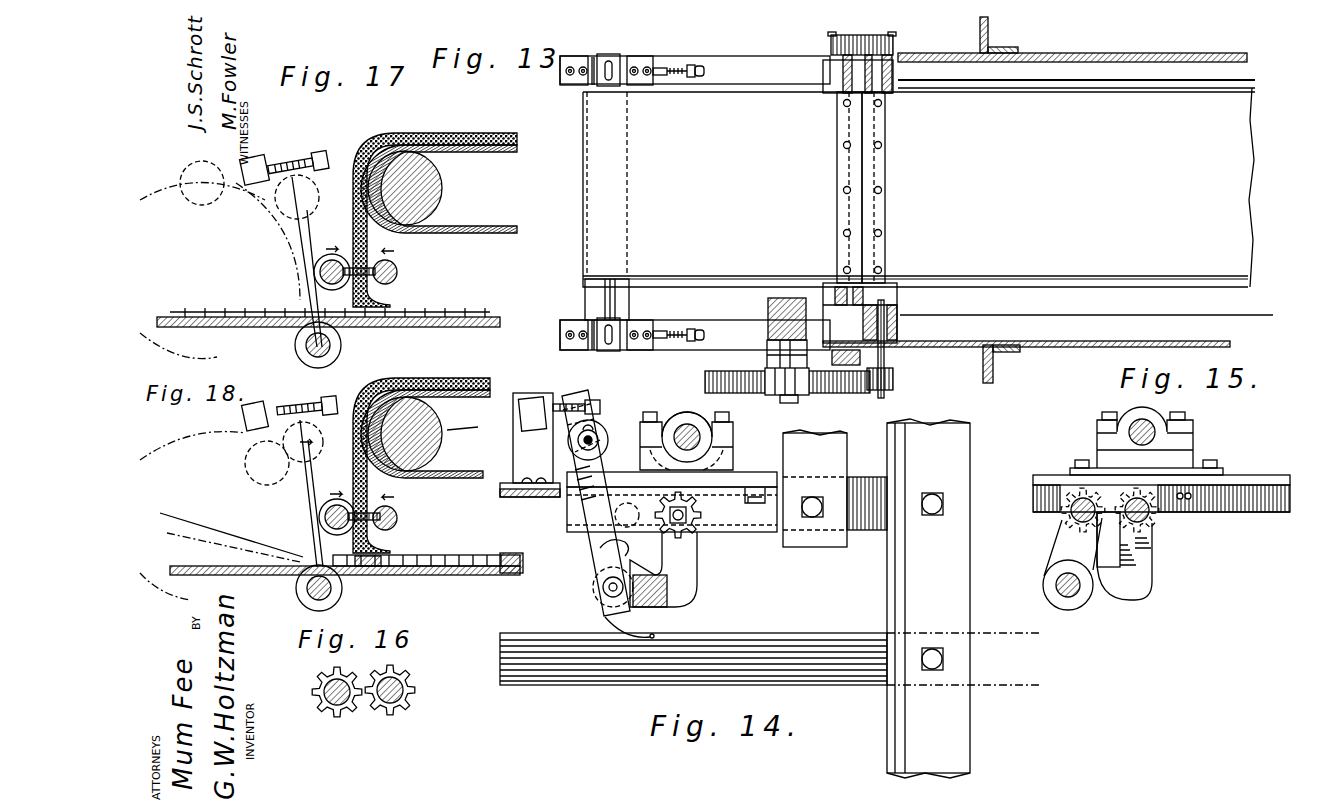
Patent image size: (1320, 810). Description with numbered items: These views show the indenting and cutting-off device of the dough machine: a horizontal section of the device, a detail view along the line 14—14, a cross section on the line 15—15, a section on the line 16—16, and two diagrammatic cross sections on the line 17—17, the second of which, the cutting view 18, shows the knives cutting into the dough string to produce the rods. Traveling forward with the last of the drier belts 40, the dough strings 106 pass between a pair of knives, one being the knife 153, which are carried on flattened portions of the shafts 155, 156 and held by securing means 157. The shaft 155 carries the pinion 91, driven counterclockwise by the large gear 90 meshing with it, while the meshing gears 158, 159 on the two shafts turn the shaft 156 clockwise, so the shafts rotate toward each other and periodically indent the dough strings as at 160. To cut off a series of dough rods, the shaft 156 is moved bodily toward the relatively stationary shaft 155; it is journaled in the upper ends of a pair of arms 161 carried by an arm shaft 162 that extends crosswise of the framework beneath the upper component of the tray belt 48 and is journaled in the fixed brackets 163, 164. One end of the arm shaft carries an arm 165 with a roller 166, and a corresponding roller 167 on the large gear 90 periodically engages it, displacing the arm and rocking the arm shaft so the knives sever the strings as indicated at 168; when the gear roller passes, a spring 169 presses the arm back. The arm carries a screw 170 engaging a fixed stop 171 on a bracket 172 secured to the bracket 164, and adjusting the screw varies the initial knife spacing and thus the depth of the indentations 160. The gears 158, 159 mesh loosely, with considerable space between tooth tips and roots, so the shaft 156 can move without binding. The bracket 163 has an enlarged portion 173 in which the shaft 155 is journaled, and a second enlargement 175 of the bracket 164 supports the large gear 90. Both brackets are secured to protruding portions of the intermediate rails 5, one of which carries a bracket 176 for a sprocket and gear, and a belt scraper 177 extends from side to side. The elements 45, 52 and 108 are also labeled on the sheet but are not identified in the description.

In FIG. 14, the intermediate rails 5 is at (758, 507).
In FIG. 15, the intermediate rails 5 is at (1258, 484).
In FIG. 13, the bracket piece 14 is at (833, 358).
In FIG. 13, the section line 15 is at (789, 108).
In FIG. 13, the section line / post 16 is at (822, 37).
In FIG. 13, the section line / base bar 17 is at (902, 164).
In FIG. 14, the section line / base bar 17 is at (930, 395).
In FIG. 18, the inclined guide 18 is at (190, 522).
In FIG. 17, the drier belts 40 is at (492, 144).
In FIG. 18, the drier belts 40 is at (452, 392).
In FIG. 13, the drier belts 40 is at (688, 405).
In FIG. 14, the drier belts 40 is at (688, 410).
In FIG. 17, the roller / bearing 45 is at (443, 190).
In FIG. 18, the roller / bearing 45 is at (440, 452).
In FIG. 14, the roller / bearing 45 is at (712, 425).
In FIG. 18, the tray belt 48 is at (237, 576).
In FIG. 13, the tray belt 48 is at (678, 266).
In FIG. 13, the lower rail 52 is at (595, 299).
In FIG. 13, the large gear 90 is at (787, 391).
In FIG. 13, the pinion 91 is at (885, 380).
In FIG. 14, the pinion 91 is at (695, 537).
In FIG. 18, the dough strings 106 is at (374, 395).
In FIG. 17, the curved guide 108 is at (375, 120).
In FIG. 17, the knife 153 is at (395, 266).
In FIG. 18, the knife 153 is at (398, 513).
In FIG. 17, the shaft 155 is at (398, 275).
In FIG. 18, the shaft 155 is at (398, 522).
In FIG. 16, the shaft 155 is at (414, 700).
In FIG. 13, the shaft 155 is at (897, 312).
In FIG. 15, the shaft 155 is at (1152, 525).
In FIG. 17, the shaft 156 is at (325, 276).
In FIG. 18, the shaft 156 is at (330, 521).
In FIG. 16, the shaft 156 is at (322, 703).
In FIG. 13, the shaft 156 is at (835, 300).
In FIG. 15, the shaft 156 is at (1070, 516).
In FIG. 17, the securing means 157 is at (314, 270).
In FIG. 18, the securing means 157 is at (319, 515).
In FIG. 13, the securing means 157 is at (878, 145).
In FIG. 16, the gear 158 is at (413, 677).
In FIG. 13, the gear 158 is at (887, 34).
In FIG. 15, the gear 158 is at (1160, 518).
In FIG. 16, the gear 159 is at (314, 684).
In FIG. 13, the gear 159 is at (845, 34).
In FIG. 15, the gear 159 is at (1068, 508).
In FIG. 17, the indentations 160 is at (473, 307).
In FIG. 18, the indentations 160 is at (502, 553).
In FIG. 14, the indentations 160 is at (518, 551).
In FIG. 17, the arms 161 is at (302, 296).
In FIG. 18, the arms 161 is at (300, 560).
In FIG. 15, the arms 161 is at (1058, 546).
In FIG. 17, the arm shaft 162 is at (306, 347).
In FIG. 18, the arm shaft 162 is at (308, 593).
In FIG. 13, the arm shaft 162 is at (848, 145).
In FIG. 14, the arm shaft 162 is at (603, 587).
In FIG. 15, the arm shaft 162 is at (1066, 597).
In FIG. 13, the fixed bracket 163 is at (820, 72).
In FIG. 15, the fixed bracket 163 is at (1130, 572).
In FIG. 14, the fixed bracket 164 is at (567, 498).
In FIG. 14, the arm 165 is at (592, 543).
In FIG. 17, the roller 166 is at (312, 186).
In FIG. 18, the roller 166 is at (284, 453).
In FIG. 13, the roller 166 is at (618, 418).
In FIG. 14, the roller 166 is at (608, 432).
In FIG. 17, the roller 167 is at (196, 170).
In FIG. 18, the severance 168 is at (372, 572).
In FIG. 14, the spring 169 is at (634, 552).
In FIG. 17, the screw 170 is at (312, 156).
In FIG. 18, the screw 170 is at (323, 392).
In FIG. 13, the screw 170 is at (620, 392).
In FIG. 14, the screw 170 is at (610, 381).
In FIG. 17, the fixed stop 171 is at (282, 165).
In FIG. 18, the fixed stop 171 is at (272, 395).
In FIG. 14, the fixed stop 171 is at (530, 397).
In FIG. 18, the bracket 172 is at (479, 429).
In FIG. 13, the enlarged portion 173 is at (1076, 70).
In FIG. 13, the second enlargement 175 is at (768, 320).
In FIG. 14, the bracket 176 is at (816, 548).
In FIG. 13, the scraper 177 is at (905, 331).